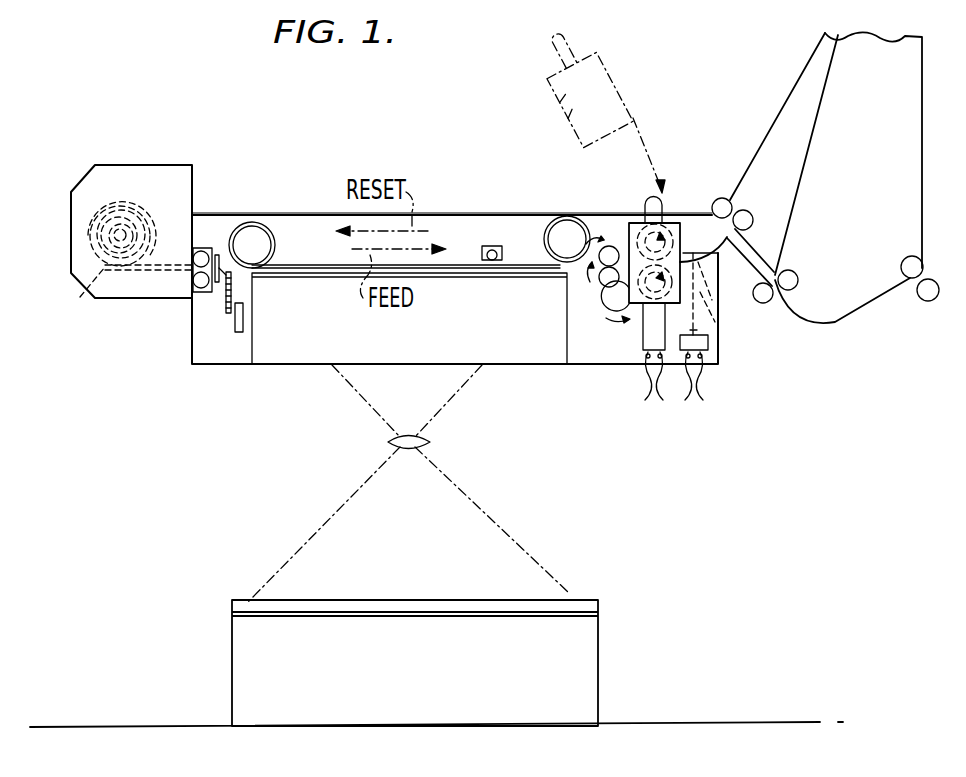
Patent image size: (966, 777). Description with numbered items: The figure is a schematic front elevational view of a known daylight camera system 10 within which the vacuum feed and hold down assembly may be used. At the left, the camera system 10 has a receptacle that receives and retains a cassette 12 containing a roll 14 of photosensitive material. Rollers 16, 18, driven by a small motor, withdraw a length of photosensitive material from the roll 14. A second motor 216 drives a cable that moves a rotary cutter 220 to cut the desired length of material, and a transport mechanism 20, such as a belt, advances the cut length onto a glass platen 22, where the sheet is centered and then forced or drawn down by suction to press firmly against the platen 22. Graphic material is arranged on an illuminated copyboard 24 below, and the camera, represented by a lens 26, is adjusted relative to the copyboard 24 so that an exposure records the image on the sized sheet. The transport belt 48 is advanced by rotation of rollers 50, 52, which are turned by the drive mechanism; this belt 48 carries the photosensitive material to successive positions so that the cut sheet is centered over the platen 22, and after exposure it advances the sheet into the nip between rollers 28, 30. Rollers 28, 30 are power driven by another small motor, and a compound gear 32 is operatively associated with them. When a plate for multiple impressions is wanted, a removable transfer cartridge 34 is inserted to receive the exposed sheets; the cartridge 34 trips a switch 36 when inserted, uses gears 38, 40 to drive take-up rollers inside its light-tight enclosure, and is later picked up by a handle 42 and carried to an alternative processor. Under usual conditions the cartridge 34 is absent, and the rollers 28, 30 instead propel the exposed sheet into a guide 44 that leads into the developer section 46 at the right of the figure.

The daylight camera system 10 is at (183, 382).
The cassette 12 is at (150, 165).
The roll of photosensitive material 14 is at (80, 297).
The roller 16 is at (201, 252).
The roller 18 is at (194, 283).
The transport mechanism 20 is at (304, 269).
The glass platen 22 is at (455, 279).
The illuminated copyboard 24 is at (420, 600).
The lens 26 is at (420, 440).
The roller 28 is at (609, 230).
The roller 30 is at (606, 288).
The compound gear 32 is at (620, 310).
The removable transfer cartridge 34 is at (565, 118).
The switch 36 is at (712, 346).
The gear 38 is at (707, 320).
The gear 40 is at (706, 287).
The handle 42 is at (640, 200).
The guide 44 is at (710, 230).
The developer section 46 is at (803, 327).
The transport belt 48 is at (528, 266).
The roller 50 is at (252, 232).
The roller 52 is at (567, 225).
The second motor 216 is at (245, 318).
The rotary cutter 220 is at (217, 284).